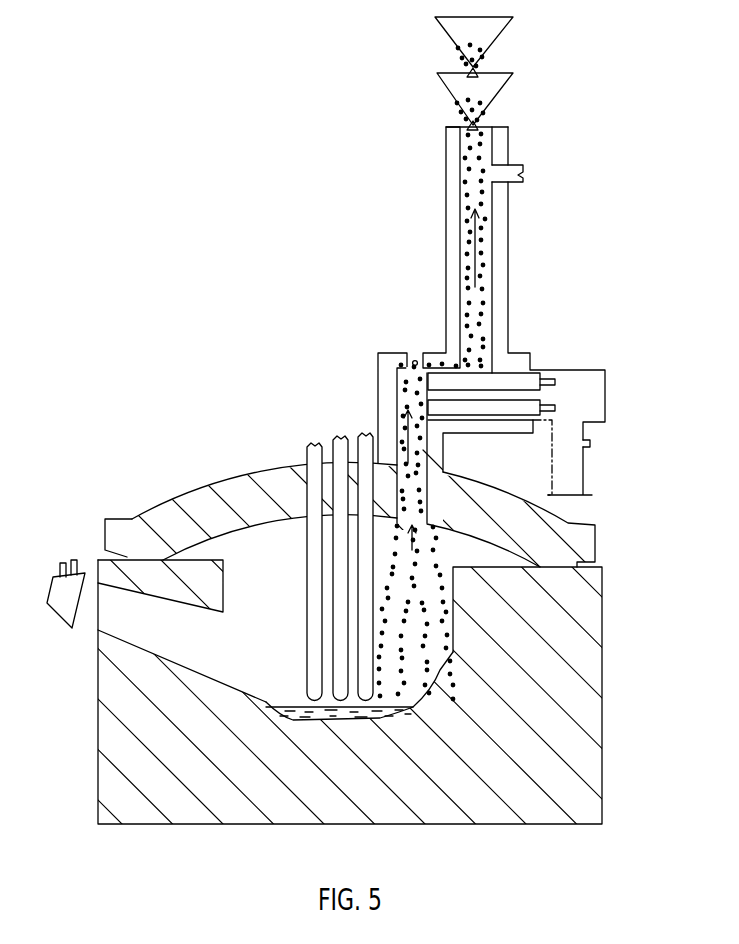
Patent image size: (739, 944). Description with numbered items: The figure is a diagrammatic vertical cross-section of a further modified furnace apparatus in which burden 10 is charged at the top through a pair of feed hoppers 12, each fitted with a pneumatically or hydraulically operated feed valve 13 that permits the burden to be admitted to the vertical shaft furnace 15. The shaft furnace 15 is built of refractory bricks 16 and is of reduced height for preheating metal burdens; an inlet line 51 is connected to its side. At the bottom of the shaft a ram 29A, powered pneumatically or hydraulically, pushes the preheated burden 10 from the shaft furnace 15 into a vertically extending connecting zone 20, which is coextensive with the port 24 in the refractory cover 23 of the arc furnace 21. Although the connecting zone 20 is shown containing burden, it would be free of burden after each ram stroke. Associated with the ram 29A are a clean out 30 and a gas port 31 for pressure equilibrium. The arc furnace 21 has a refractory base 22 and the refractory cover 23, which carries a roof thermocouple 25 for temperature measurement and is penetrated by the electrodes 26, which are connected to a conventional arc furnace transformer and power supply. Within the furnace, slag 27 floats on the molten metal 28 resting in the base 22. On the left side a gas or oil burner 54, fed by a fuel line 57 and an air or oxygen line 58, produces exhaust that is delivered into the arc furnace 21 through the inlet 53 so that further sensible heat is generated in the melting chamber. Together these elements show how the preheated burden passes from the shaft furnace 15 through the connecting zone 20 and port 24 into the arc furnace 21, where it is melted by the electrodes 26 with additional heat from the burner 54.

The burden 10 is at (483, 60).
The feed hoppers 12 is at (495, 45).
The feed valve 13 is at (480, 72).
The vertical shaft furnace 15 is at (490, 303).
The refractory bricks 16 is at (503, 232).
The connecting zone 20 is at (420, 497).
The arc furnace 21 is at (230, 655).
The refractory base 22 is at (428, 816).
The refractory cover 23 is at (254, 492).
The port 24 is at (412, 362).
The roof thermocouple 25 is at (225, 525).
The electrodes 26 is at (318, 457).
The slag 27 is at (266, 705).
The molten bath 28 is at (318, 722).
The ram 29A is at (518, 384).
The clean out 30 is at (576, 488).
The gas port 31 is at (588, 447).
The inlet line 51 is at (515, 172).
The inlet 53 is at (158, 641).
The gas or oil burner 54 is at (60, 612).
The fuel line 57 is at (62, 566).
The air or oxygen line 58 is at (78, 557).